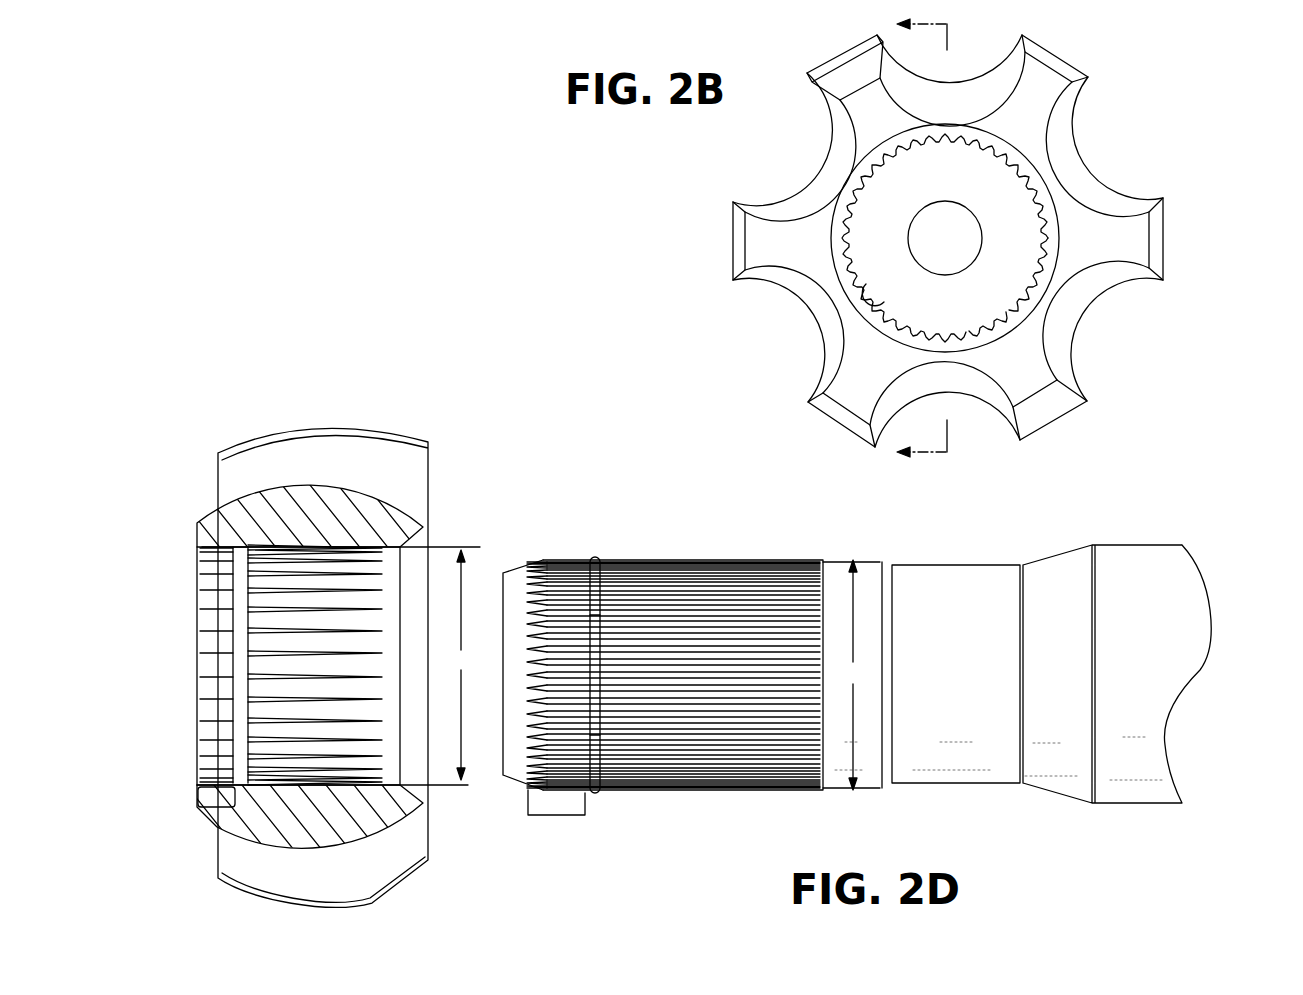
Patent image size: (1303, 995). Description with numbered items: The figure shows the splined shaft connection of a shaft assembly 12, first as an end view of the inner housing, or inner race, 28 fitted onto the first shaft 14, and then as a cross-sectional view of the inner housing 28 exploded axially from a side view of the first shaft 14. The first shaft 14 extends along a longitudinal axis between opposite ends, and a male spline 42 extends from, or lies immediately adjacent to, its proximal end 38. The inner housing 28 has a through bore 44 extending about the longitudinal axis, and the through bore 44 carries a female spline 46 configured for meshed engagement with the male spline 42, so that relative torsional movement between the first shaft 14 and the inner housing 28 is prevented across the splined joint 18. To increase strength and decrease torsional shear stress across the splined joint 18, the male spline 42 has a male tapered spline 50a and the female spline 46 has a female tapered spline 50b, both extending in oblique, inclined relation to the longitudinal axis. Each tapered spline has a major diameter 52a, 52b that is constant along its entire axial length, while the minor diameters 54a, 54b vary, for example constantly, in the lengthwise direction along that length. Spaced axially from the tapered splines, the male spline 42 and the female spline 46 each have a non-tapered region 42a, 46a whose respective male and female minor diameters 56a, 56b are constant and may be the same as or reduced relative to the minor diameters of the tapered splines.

In FIG. 2B, the shaft assembly 12 is at (1150, 104).
In FIG. 2D, the shaft assembly 12 is at (479, 410).
In FIG. 2B, the first shaft 14 is at (1042, 238).
In FIG. 2D, the first shaft 14 is at (955, 787).
In FIG. 2B, the splined joint 18 is at (1049, 182).
In FIG. 2B, the inner housing 28 is at (1046, 56).
In FIG. 2D, the inner housing 28 is at (428, 442).
In FIG. 2B, the proximal end 38 is at (1021, 266).
In FIG. 2D, the proximal end 38 is at (503, 777).
In FIG. 2B, the male spline 42 is at (1040, 310).
In FIG. 2D, the male spline 42 is at (717, 560).
In FIG. 2D, the non-tapered region 42a is at (558, 817).
In FIG. 2D, the through bore 44 is at (135, 714).
In FIG. 2B, the female spline 46 is at (863, 283).
In FIG. 2D, the female spline 46 is at (283, 588).
In FIG. 2D, the non-tapered region 46a is at (224, 814).
In FIG. 2B, the male tapered spline 50a is at (993, 332).
In FIG. 2D, the male tapered spline 50a is at (740, 592).
In FIG. 2D, the female tapered spline 50b is at (329, 588).
In FIG. 2D, the major diameter 52a is at (851, 675).
In FIG. 2D, the major diameter 52b is at (341, 666).
In FIG. 2D, the minor diameter 54a is at (598, 557).
In FIG. 2D, the minor diameter 54b is at (255, 647).
In FIG. 2D, the male minor diameter 56a is at (533, 653).
In FIG. 2D, the female minor diameter 56b is at (205, 648).